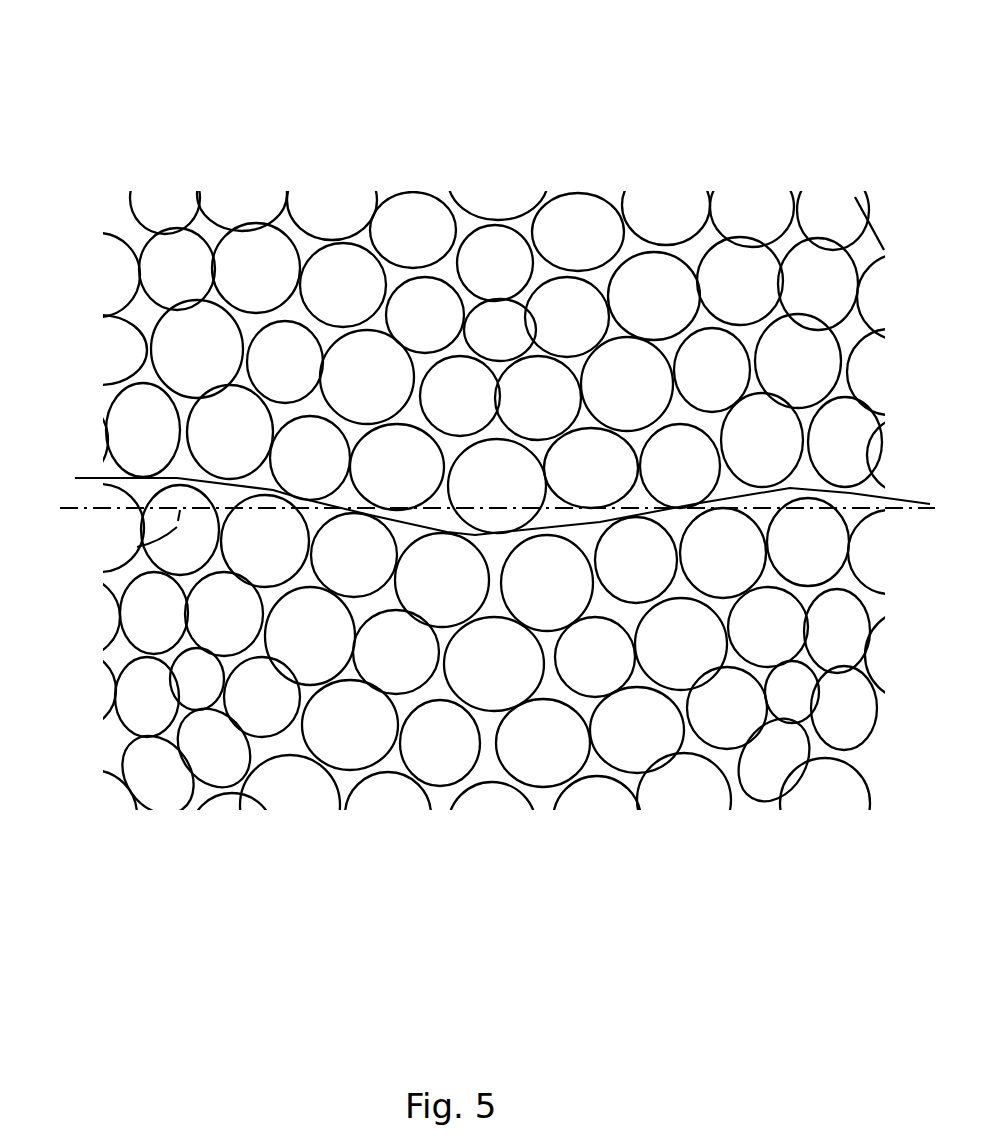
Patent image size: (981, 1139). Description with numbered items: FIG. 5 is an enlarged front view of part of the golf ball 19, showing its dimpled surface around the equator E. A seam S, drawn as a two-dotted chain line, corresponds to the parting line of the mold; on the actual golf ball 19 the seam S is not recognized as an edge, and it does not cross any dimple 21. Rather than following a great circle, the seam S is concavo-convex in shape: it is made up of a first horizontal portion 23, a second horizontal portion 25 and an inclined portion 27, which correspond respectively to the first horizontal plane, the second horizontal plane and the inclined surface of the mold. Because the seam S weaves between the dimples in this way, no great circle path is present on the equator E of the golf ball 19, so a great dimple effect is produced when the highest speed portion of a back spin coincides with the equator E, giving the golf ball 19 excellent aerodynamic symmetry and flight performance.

The golf ball 19 is at (877, 26).
The dimple 21 is at (458, 393).
The first horizontal portion 23 is at (175, 480).
The second horizontal portion 25 is at (476, 532).
The inclined portion 27 is at (663, 508).
The seam S is at (82, 470).
The equator E is at (137, 547).